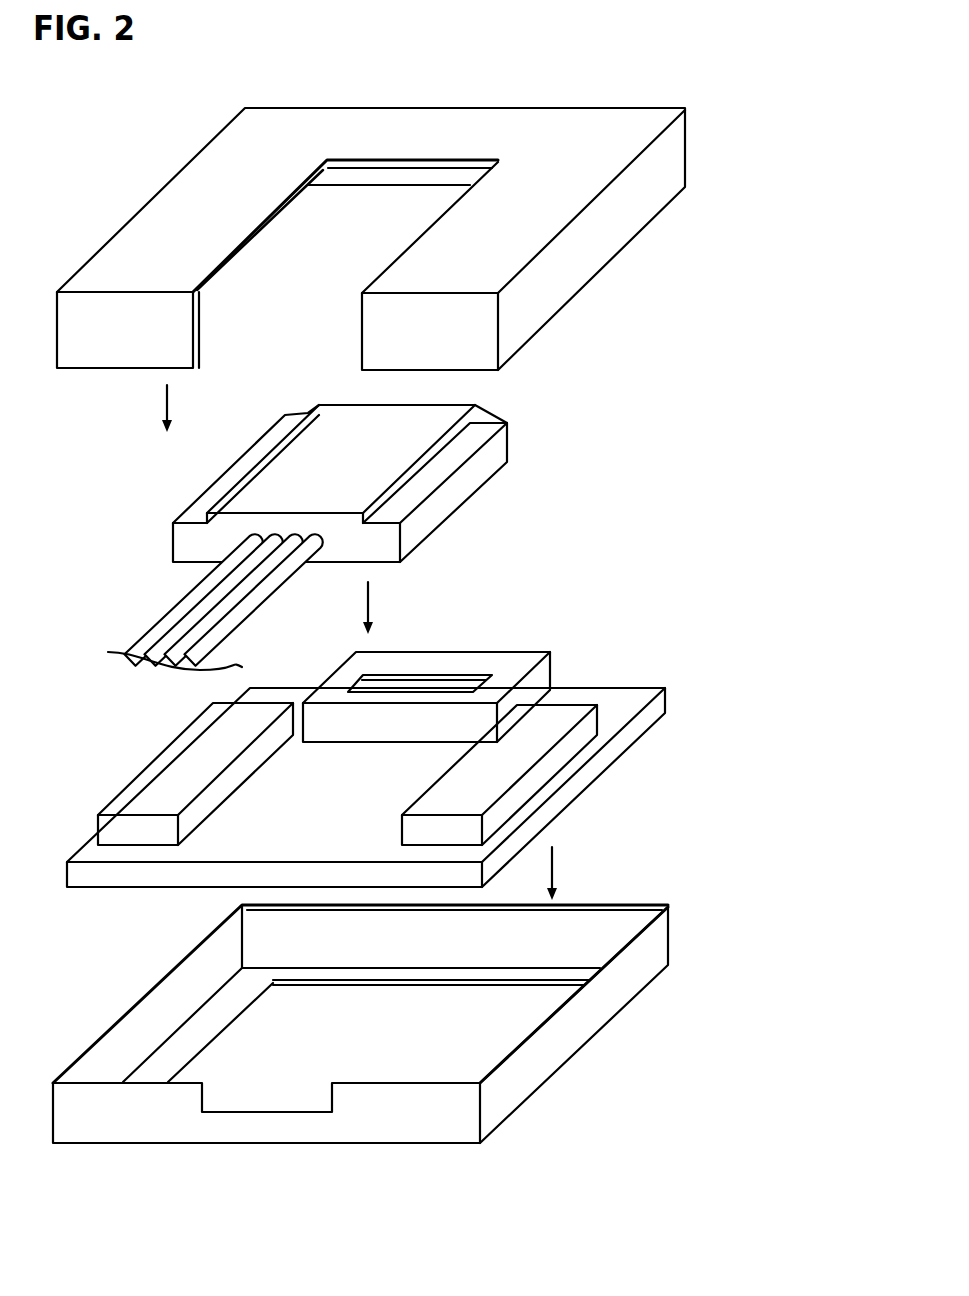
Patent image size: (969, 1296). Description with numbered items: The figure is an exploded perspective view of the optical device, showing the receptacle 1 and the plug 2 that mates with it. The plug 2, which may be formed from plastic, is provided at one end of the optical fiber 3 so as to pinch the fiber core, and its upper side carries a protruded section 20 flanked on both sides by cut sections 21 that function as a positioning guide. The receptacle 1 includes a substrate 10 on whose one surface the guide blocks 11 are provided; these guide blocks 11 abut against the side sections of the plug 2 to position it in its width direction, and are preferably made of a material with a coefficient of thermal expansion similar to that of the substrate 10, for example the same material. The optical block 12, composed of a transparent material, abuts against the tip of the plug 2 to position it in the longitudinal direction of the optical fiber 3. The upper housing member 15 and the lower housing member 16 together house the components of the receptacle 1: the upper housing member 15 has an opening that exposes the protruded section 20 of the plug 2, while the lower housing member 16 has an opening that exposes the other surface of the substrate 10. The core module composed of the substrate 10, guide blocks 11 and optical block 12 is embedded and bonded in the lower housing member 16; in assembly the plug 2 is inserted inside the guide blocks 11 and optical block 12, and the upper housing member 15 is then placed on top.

The receptacle 1 is at (431, 735).
The plug 2 is at (375, 483).
The optical fiber 3 is at (158, 616).
The substrate 10 is at (593, 692).
The guide blocks 11 is at (185, 750).
The optical block 12 is at (497, 660).
The upper housing member 15 is at (195, 207).
The lower housing member 16 is at (557, 1037).
The protruded section 20 is at (282, 468).
The cut sections 21 is at (482, 428).